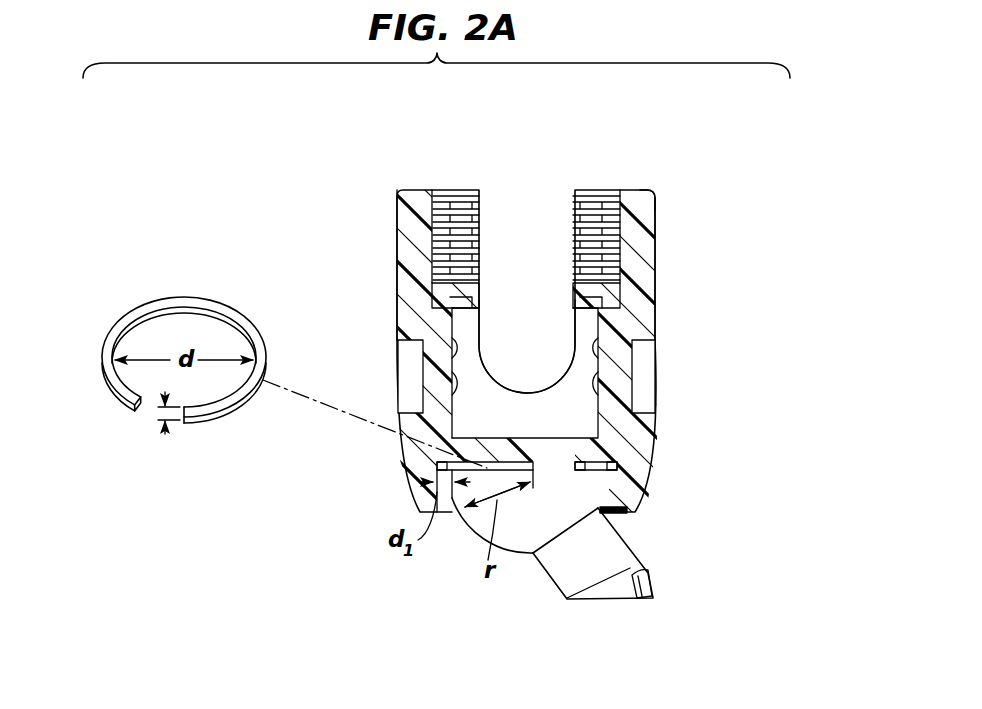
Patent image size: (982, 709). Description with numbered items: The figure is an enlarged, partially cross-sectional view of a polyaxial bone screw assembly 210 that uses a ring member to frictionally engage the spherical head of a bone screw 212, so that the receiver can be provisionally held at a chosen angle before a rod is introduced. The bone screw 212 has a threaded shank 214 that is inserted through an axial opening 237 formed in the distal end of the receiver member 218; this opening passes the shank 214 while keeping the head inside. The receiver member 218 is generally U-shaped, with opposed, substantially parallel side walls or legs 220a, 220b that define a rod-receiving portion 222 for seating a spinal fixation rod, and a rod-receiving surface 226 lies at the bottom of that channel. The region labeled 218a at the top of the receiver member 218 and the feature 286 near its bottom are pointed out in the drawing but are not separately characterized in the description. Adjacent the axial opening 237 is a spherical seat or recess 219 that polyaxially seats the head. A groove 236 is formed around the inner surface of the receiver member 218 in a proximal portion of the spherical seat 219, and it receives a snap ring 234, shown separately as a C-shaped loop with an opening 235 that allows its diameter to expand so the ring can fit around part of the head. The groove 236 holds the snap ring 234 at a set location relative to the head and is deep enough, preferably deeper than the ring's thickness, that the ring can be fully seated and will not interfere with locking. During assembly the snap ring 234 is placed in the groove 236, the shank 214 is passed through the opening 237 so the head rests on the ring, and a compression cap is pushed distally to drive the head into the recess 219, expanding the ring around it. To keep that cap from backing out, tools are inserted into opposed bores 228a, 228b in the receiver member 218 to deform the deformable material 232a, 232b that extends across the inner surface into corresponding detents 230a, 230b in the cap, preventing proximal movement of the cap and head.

The polyaxial bone screw assembly 210 is at (262, 150).
The bone screw 212 is at (650, 560).
The threaded shank 214 is at (537, 562).
The receiver member 218 is at (758, 265).
The top of receiver 218a is at (660, 192).
The spherical seat 219 is at (613, 487).
The side wall or leg 220a is at (652, 223).
The side wall or leg 220b is at (400, 215).
The rod-receiving portion 222 is at (545, 203).
The rod-receiving proximal surface 226 is at (527, 388).
The bore 228a is at (656, 377).
The bore 228b is at (420, 378).
The detent 230a is at (605, 336).
The detent 230b is at (447, 333).
The deformable material 232a is at (623, 383).
The deformable material 232b is at (447, 393).
The snap ring 234 is at (95, 361).
The opening 235 is at (152, 412).
The groove 236 is at (437, 458).
The axial opening 237 is at (462, 520).
The bottom opening of receiver 286 is at (640, 514).